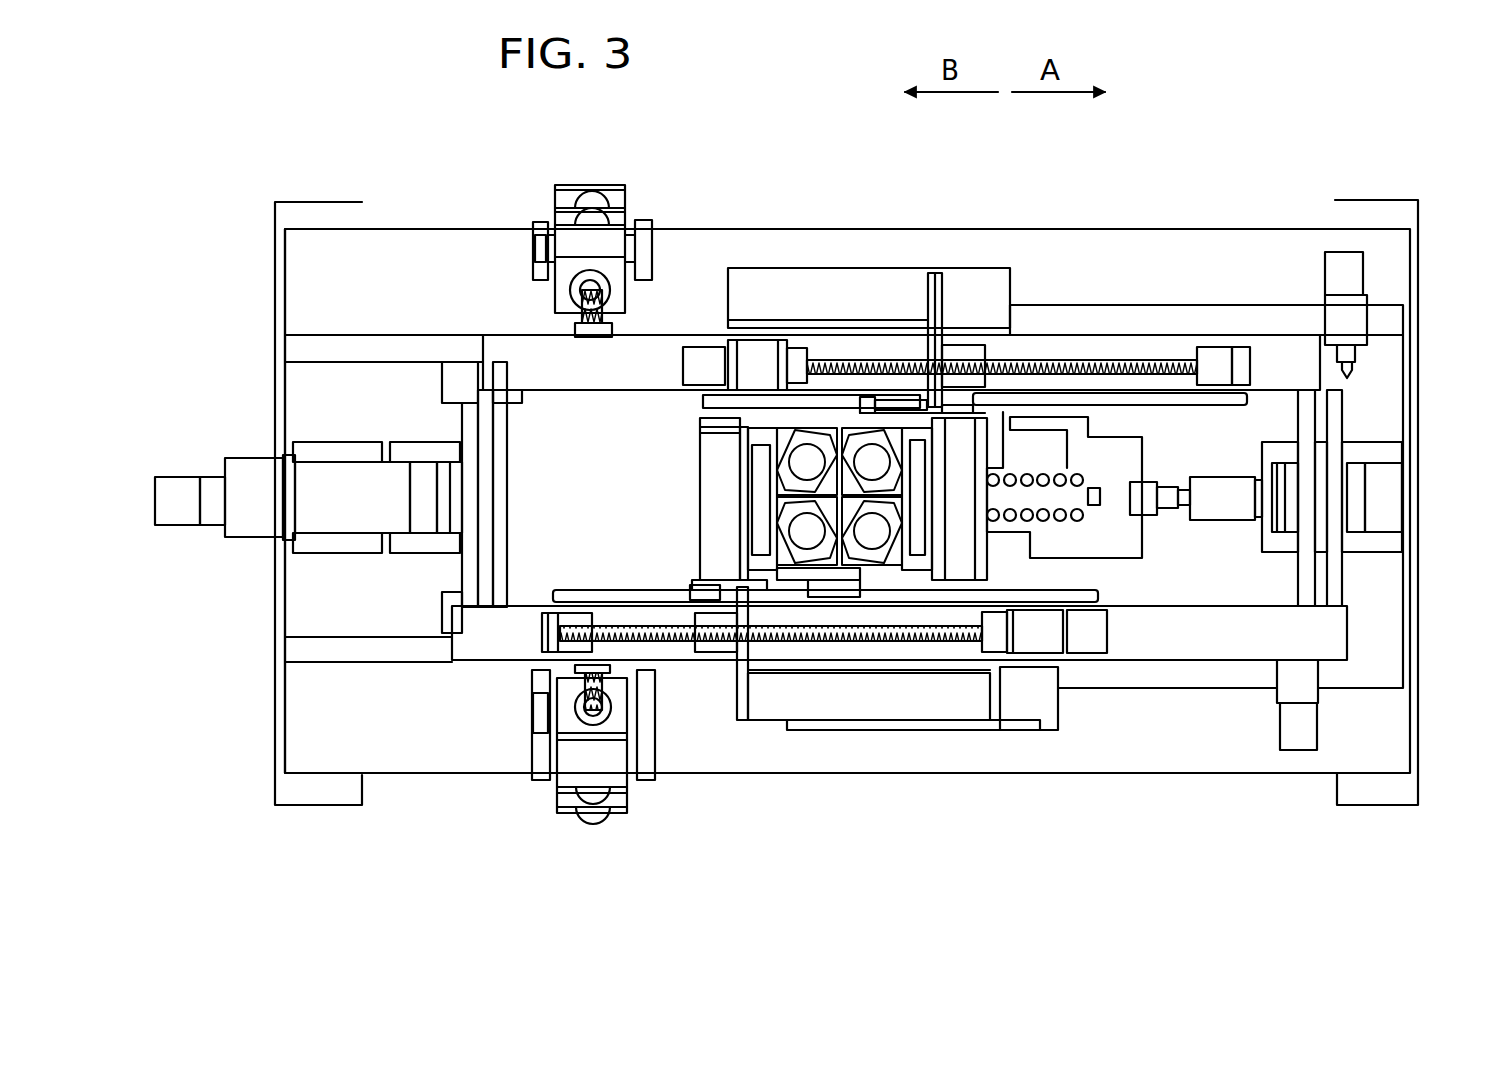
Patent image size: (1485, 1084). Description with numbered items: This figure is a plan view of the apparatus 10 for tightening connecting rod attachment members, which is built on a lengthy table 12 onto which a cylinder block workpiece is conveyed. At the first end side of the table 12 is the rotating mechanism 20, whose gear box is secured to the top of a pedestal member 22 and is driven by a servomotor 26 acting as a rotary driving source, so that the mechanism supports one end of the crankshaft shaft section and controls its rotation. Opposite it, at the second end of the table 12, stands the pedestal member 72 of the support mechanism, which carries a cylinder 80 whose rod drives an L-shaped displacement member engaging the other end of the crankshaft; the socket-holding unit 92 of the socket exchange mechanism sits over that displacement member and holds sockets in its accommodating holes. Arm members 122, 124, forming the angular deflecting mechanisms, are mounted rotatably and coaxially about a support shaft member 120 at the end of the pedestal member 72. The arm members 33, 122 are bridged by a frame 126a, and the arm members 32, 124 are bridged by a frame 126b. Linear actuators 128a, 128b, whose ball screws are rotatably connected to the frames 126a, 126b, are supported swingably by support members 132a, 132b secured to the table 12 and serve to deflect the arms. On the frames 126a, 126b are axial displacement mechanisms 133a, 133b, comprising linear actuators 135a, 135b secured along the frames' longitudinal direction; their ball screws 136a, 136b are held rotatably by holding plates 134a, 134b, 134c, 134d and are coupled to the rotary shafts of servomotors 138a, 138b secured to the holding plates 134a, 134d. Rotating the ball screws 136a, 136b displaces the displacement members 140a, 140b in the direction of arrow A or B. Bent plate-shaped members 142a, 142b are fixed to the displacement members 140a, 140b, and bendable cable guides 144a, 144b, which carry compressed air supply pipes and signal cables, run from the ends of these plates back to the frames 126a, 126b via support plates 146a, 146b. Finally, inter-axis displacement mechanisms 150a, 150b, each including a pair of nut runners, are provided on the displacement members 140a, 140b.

The apparatus for tightening connecting rod attachment members 10 is at (1207, 113).
The table 12 is at (1128, 243).
The rotating mechanism 20 is at (323, 440).
The pedestal member 22 is at (312, 608).
The servomotor 26 is at (252, 478).
The arm member 32 is at (455, 385).
The arm member 33 is at (500, 420).
The pedestal member 72 is at (1390, 632).
The cylinder 80 is at (1220, 510).
The socket-holding unit 92 is at (1077, 453).
The support shaft member 120 is at (1390, 500).
The arm member 122 is at (1305, 410).
The arm member 124 is at (1335, 420).
The frame 126a is at (655, 350).
The frame 126b is at (672, 650).
The linear actuator 128a is at (570, 243).
The linear actuator 128b is at (573, 762).
The support member 132a is at (538, 235).
The support member 132b is at (540, 745).
The axial displacement mechanism 133a is at (1017, 257).
The axial displacement mechanism 133b is at (1010, 660).
The holding plate 134a is at (805, 353).
The holding plate 134b is at (1240, 347).
The holding plate 134c is at (548, 640).
The holding plate 134d is at (1050, 660).
The linear actuator 135a is at (757, 330).
The linear actuator 135b is at (1060, 662).
The ball screw 136a is at (1150, 355).
The ball screw 136b is at (930, 640).
The servomotor 138a is at (700, 353).
The servomotor 138b is at (1097, 647).
The displacement member 140a is at (968, 340).
The displacement member 140b is at (717, 640).
The plate-shaped member 142a is at (912, 273).
The plate-shaped member 142b is at (745, 700).
The cable guide 144a is at (868, 285).
The cable guide 144b is at (873, 705).
The support plate 146a is at (962, 273).
The support plate 146b is at (1053, 720).
The inter-axis displacement mechanism 150a is at (978, 403).
The inter-axis displacement mechanism 150b is at (792, 600).